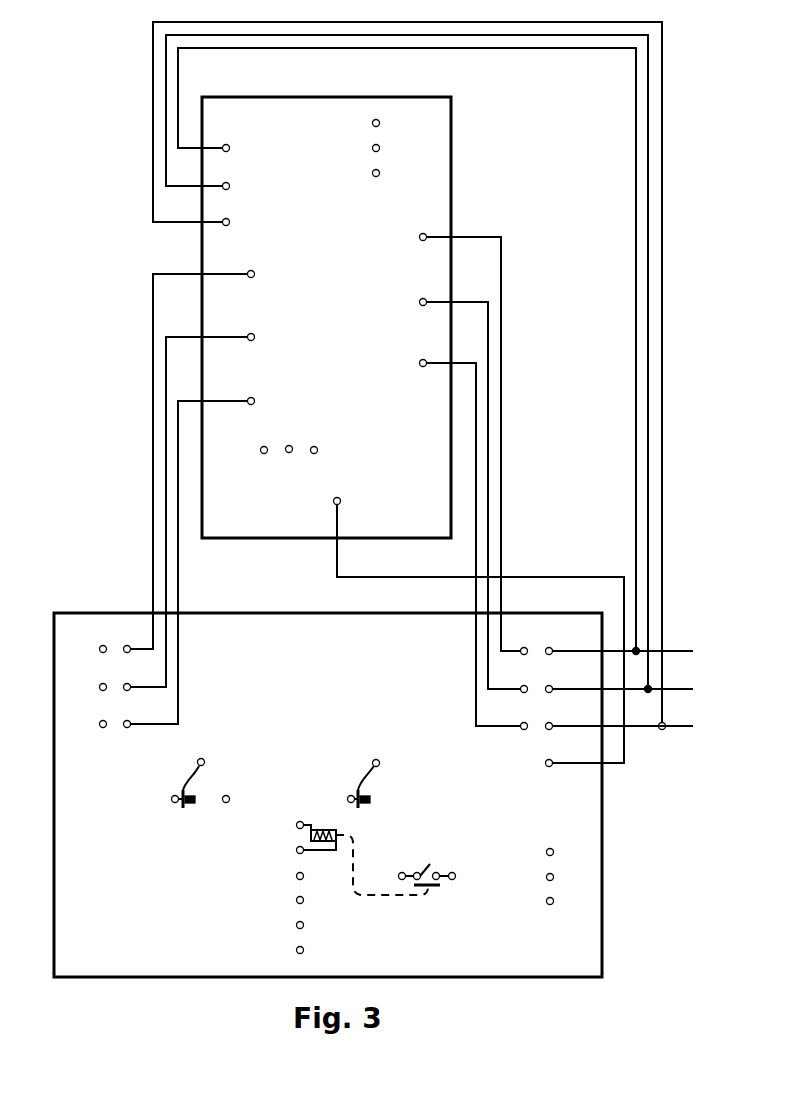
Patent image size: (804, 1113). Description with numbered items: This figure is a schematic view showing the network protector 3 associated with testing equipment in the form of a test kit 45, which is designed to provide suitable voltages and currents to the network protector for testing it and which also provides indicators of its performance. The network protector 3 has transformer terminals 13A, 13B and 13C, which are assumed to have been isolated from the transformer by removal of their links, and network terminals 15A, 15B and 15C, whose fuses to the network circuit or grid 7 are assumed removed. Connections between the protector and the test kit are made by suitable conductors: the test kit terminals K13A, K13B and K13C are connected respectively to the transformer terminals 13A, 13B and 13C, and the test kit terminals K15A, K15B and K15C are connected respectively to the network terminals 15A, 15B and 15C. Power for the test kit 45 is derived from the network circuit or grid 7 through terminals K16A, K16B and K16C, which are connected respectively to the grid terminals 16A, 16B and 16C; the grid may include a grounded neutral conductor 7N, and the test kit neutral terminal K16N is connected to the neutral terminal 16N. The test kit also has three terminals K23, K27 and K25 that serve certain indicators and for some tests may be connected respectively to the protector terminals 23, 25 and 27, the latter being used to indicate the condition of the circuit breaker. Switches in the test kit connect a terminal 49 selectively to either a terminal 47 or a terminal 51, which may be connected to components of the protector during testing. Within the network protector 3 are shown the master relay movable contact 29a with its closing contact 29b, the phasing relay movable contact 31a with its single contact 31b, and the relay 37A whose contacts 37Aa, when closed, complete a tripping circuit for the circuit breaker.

The network protector 3 is at (326, 687).
The test kit 45 is at (343, 359).
The terminal 47 is at (264, 454).
The terminal 49 is at (289, 446).
The terminal 51 is at (314, 454).
The network circuit or grid 7 is at (679, 353).
The neutral conductor 7N is at (633, 747).
The transformer terminal 13A is at (134, 637).
The transformer terminal 13B is at (127, 684).
The transformer terminal 13C is at (127, 720).
The network terminal 15A is at (524, 648).
The network terminal 15B is at (524, 686).
The network terminal 15C is at (524, 722).
The network circuit terminal 16A is at (549, 648).
The network circuit terminal 16B is at (549, 686).
The network circuit terminal 16C is at (549, 722).
The neutral terminal 16N is at (549, 760).
The terminal 23 is at (566, 901).
The terminal 25 is at (566, 852).
The terminal 27 is at (566, 877).
The movable contact 29a is at (181, 790).
The closing contact 29b is at (171, 799).
The movable contact 31a is at (360, 806).
The contact 31b is at (347, 799).
The relay 37A is at (346, 876).
The relay contacts 37Aa is at (436, 866).
The test kit terminal K16A is at (407, 349).
The test kit terminal K16B is at (407, 362).
The test kit terminal K16C is at (407, 372).
The test kit terminal K13A is at (222, 456).
The test kit terminal K13B is at (221, 507).
The test kit terminal K13C is at (221, 557).
The test kit terminal K15A is at (444, 439).
The test kit terminal K15B is at (444, 490).
The test kit terminal K15C is at (444, 539).
The neutral terminal K16N is at (479, 627).
The test kit terminal K25 is at (398, 123).
The test kit terminal K27 is at (398, 148).
The test kit terminal K23 is at (398, 173).